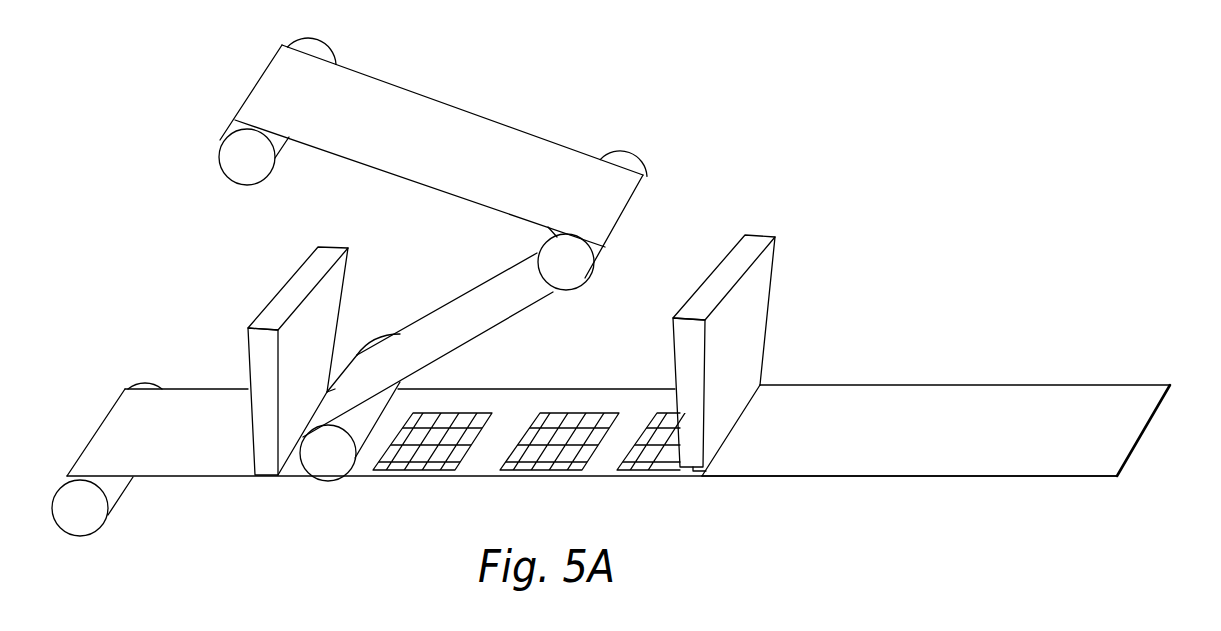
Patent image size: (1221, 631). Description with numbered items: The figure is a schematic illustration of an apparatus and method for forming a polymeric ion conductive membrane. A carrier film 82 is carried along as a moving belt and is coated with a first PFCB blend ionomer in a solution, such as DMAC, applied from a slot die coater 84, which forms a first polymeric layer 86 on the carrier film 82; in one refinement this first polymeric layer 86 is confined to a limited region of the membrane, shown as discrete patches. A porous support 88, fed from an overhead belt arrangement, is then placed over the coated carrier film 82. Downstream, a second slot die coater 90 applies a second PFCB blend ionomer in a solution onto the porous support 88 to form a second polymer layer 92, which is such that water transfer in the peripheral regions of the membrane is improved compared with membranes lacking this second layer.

The carrier film 82 is at (162, 457).
The slot die coater 84 is at (272, 307).
The first polymeric layer 86 is at (420, 462).
The porous support 88 is at (468, 302).
The slot die coater 90 is at (767, 265).
The second polymer layer 92 is at (1038, 390).